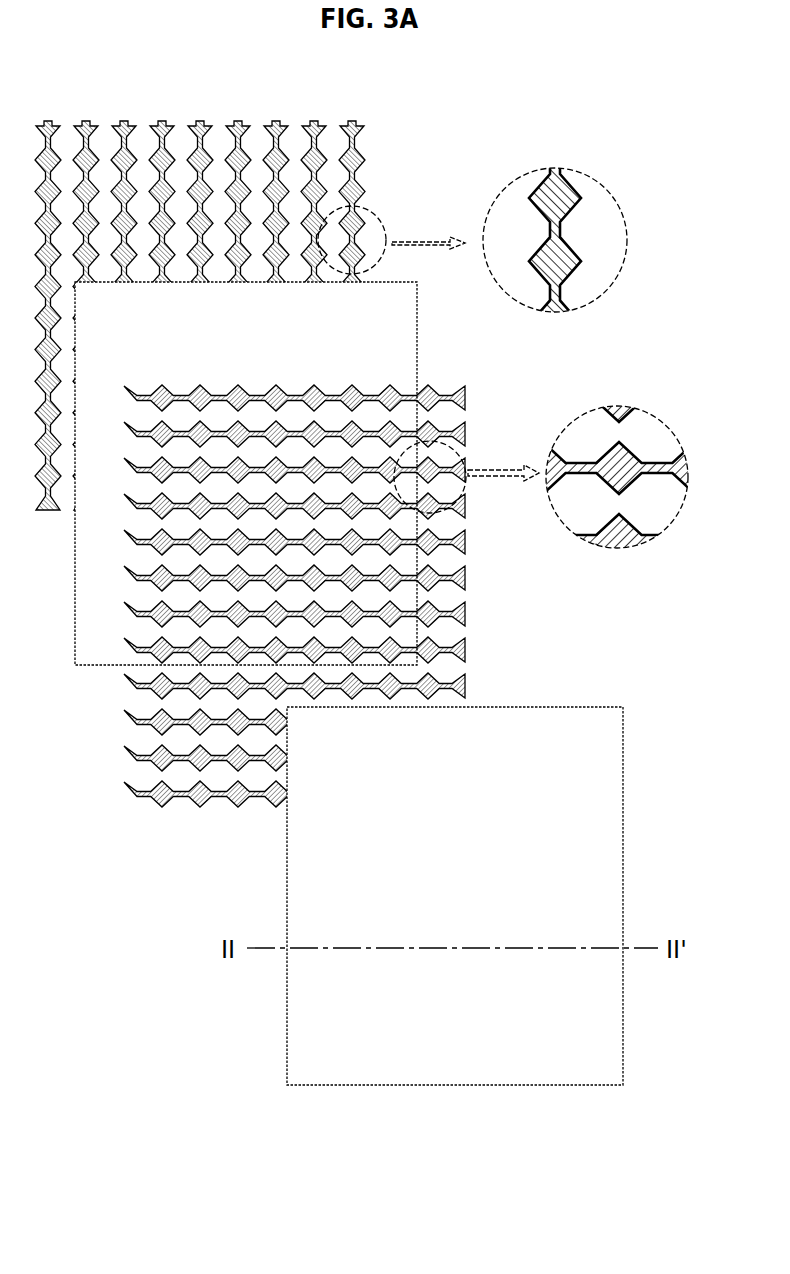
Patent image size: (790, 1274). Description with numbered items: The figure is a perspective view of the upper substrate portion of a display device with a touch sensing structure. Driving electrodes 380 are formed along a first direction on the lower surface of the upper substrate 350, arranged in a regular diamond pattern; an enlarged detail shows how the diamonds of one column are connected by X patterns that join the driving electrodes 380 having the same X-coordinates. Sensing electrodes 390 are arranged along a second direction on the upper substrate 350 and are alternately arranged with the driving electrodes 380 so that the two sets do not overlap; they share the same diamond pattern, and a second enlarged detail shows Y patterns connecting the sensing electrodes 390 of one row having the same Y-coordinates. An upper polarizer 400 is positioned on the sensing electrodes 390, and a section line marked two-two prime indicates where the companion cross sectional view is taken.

The driving electrodes 380 is at (349, 120).
The sensing electrodes 390 is at (122, 396).
The upper substrate 350 is at (418, 342).
The upper polarizer 400 is at (624, 766).